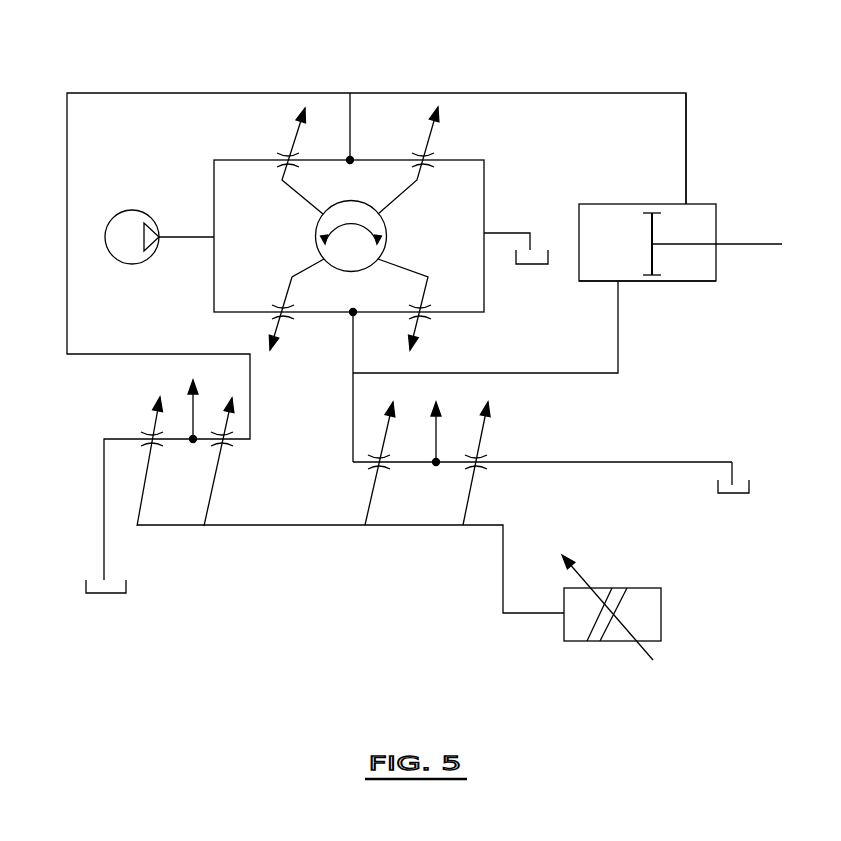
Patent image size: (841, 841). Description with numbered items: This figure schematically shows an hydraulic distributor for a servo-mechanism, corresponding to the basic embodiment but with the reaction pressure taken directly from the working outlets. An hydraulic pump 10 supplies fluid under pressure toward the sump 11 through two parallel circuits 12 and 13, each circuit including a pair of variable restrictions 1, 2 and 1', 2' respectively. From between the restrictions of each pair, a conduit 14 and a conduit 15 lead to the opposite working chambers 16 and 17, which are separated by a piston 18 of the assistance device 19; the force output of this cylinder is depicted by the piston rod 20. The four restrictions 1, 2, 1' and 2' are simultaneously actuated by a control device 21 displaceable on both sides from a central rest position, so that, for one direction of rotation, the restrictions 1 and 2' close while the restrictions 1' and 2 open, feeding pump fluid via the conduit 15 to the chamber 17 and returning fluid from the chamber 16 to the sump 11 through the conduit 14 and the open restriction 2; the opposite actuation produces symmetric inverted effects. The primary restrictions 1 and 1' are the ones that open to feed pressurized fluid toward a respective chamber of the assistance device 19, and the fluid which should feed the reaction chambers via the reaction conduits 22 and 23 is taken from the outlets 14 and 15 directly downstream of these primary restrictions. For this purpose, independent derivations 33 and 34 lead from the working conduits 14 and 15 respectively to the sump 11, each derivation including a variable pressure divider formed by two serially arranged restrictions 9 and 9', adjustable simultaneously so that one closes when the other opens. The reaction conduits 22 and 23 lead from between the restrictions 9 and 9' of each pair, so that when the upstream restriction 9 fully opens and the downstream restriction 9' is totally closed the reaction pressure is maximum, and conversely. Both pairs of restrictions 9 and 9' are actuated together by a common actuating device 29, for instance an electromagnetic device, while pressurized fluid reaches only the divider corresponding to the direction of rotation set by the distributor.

The variable restriction 1 is at (297, 161).
The variable restriction 2 is at (418, 160).
The variable restriction 1' is at (296, 307).
The variable restriction 2' is at (414, 307).
The upstream restriction 9 is at (301, 462).
The downstream restriction 9' is at (323, 461).
The hydraulic pump 10 is at (128, 223).
The sump 11 is at (418, 428).
The parallel circuit 12 is at (372, 159).
The parallel circuit 13 is at (322, 311).
The conduit 14 is at (662, 133).
The conduit 15 is at (527, 370).
The working chamber 16 is at (599, 272).
The working chamber 17 is at (682, 268).
The piston 18 is at (650, 229).
The assistance device 19 is at (622, 203).
The piston rod 20 is at (748, 243).
The control device 21 is at (372, 246).
The reaction conduit 22 is at (207, 404).
The reaction conduit 23 is at (542, 422).
The common actuating device 29 is at (611, 615).
The derivation 33 is at (376, 321).
The derivation 34 is at (353, 410).